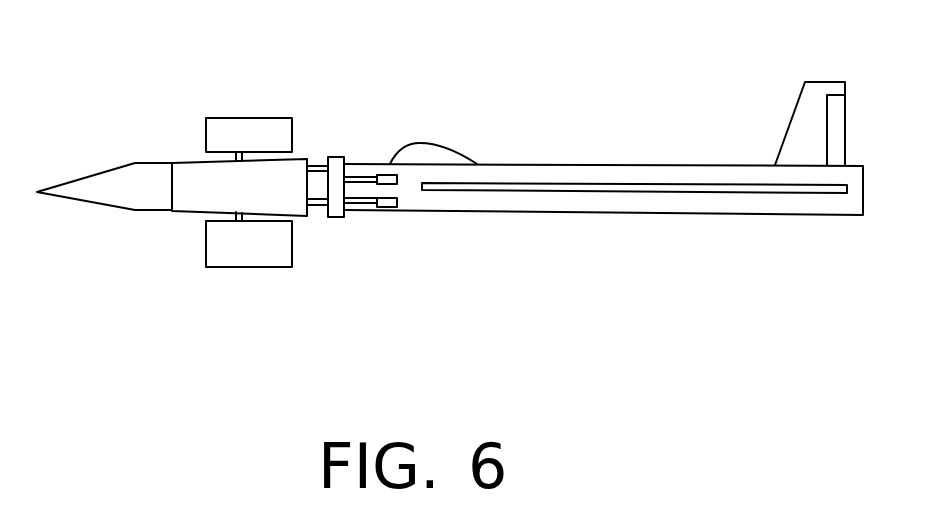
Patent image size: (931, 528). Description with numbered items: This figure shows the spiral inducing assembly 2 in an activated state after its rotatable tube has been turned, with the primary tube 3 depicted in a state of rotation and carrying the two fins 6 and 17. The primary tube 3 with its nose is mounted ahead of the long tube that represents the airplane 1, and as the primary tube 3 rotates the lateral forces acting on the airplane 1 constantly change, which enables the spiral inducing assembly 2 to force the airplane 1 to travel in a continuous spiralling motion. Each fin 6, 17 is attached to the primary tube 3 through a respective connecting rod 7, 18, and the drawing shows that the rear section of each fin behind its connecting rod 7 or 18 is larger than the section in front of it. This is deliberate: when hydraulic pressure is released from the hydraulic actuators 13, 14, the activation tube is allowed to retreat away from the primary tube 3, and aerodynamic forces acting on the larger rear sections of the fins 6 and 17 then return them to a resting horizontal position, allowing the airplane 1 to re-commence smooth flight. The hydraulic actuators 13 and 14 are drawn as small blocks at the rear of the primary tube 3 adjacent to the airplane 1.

The airplane 1 is at (502, 202).
The spiral inducing assembly 2 is at (338, 270).
The primary tube 3 is at (200, 200).
The fin 6 is at (227, 245).
The connecting rod 7 is at (242, 221).
The hydraulic actuator 13 is at (389, 180).
The hydraulic actuator 14 is at (387, 203).
The fin 17 is at (235, 130).
The connecting rod 18 is at (240, 155).